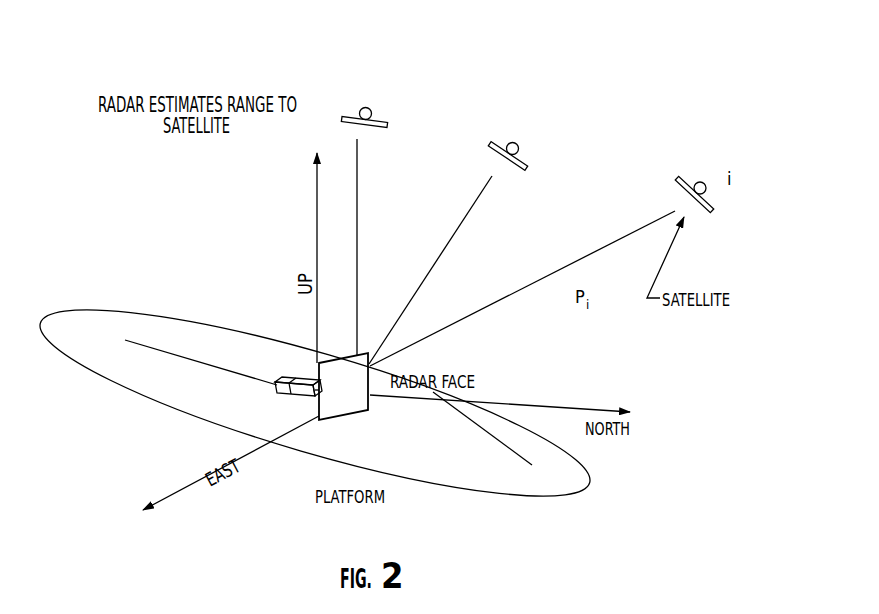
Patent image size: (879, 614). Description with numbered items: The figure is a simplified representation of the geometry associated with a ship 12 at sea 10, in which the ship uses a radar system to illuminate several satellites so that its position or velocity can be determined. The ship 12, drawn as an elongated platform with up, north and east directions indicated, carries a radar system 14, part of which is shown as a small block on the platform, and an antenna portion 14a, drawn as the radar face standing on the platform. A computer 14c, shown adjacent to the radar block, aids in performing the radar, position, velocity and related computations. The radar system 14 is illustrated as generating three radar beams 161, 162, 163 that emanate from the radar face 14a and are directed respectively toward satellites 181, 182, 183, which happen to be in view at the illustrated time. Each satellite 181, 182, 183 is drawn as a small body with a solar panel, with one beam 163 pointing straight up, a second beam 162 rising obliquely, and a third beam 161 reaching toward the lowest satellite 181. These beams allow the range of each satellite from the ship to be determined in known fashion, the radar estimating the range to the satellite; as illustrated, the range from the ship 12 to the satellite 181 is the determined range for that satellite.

The sea 10 is at (578, 27).
The ship 12 is at (590, 481).
The radar system 14 is at (299, 402).
The antenna portion 14a is at (347, 403).
The computer 14c is at (275, 385).
The radar beam 161 is at (541, 282).
The radar beam 162 is at (439, 258).
The radar beam 163 is at (357, 236).
The satellite 181 is at (686, 178).
The satellite 182 is at (508, 143).
The satellite 183 is at (363, 108).